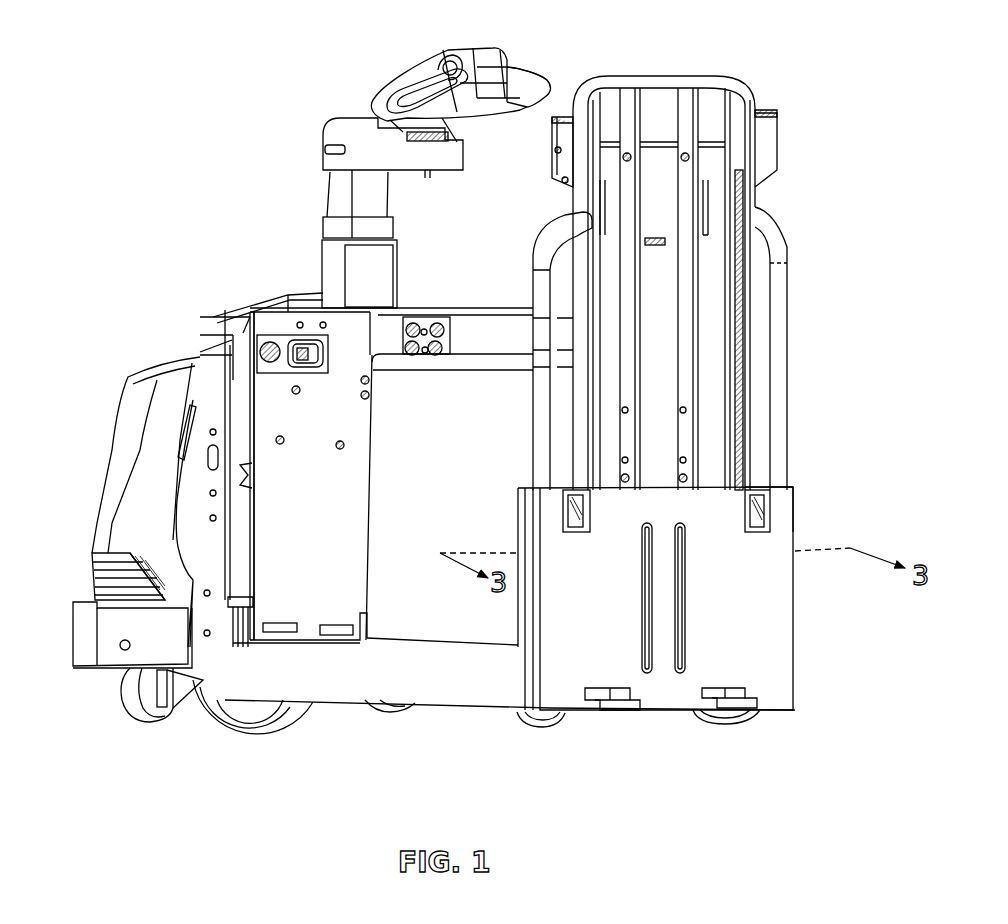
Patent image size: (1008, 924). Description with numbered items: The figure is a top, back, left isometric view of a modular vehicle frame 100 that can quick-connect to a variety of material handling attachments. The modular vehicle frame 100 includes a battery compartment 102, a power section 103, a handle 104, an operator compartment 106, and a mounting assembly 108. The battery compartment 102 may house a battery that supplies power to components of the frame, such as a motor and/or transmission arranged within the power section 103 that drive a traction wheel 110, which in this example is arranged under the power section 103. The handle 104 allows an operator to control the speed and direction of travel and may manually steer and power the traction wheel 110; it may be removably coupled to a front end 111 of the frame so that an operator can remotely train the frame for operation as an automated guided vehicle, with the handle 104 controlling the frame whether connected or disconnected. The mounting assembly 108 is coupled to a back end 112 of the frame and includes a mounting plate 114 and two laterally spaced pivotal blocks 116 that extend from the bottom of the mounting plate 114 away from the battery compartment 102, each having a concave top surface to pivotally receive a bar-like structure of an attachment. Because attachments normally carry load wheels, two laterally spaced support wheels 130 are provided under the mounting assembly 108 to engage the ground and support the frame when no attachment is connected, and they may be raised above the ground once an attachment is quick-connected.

The modular vehicle frame 100 is at (295, 38).
The battery compartment 102 is at (292, 582).
The power section 103 is at (106, 522).
The handle 104 is at (510, 48).
The operator compartment 106 is at (478, 632).
The mounting assembly 108 is at (798, 606).
The traction wheel 110 is at (230, 725).
The front end 111 is at (116, 355).
The back end 112 is at (806, 458).
The mounting plate 114 is at (768, 543).
The pivotal blocks 116 is at (617, 705).
The support wheels 130 is at (560, 717).